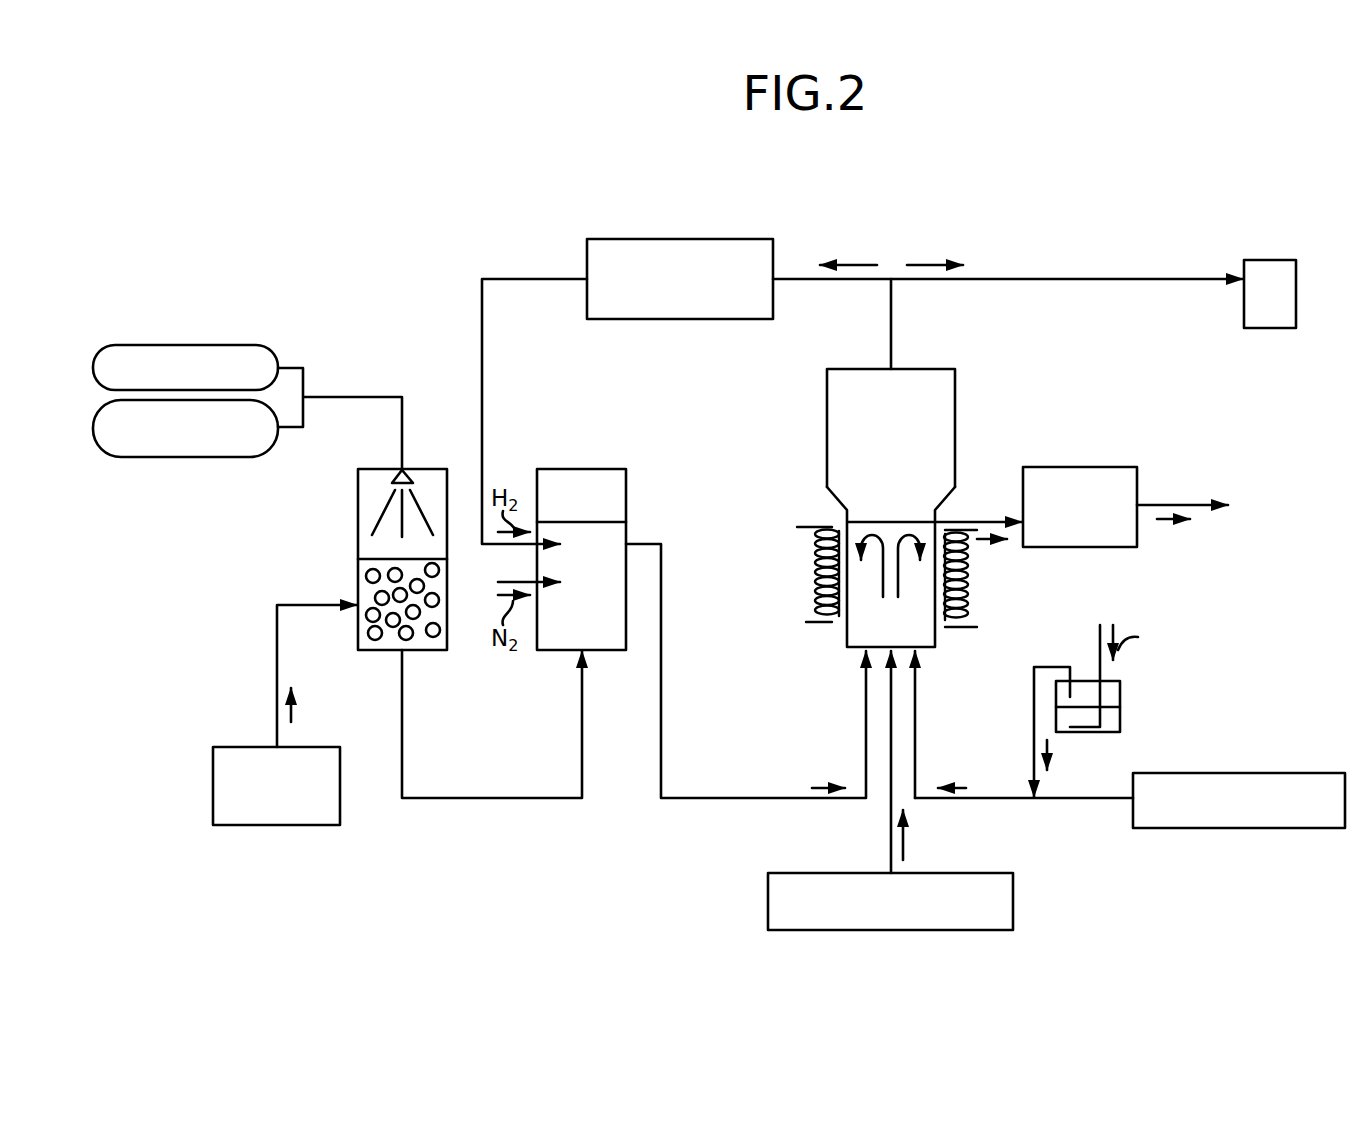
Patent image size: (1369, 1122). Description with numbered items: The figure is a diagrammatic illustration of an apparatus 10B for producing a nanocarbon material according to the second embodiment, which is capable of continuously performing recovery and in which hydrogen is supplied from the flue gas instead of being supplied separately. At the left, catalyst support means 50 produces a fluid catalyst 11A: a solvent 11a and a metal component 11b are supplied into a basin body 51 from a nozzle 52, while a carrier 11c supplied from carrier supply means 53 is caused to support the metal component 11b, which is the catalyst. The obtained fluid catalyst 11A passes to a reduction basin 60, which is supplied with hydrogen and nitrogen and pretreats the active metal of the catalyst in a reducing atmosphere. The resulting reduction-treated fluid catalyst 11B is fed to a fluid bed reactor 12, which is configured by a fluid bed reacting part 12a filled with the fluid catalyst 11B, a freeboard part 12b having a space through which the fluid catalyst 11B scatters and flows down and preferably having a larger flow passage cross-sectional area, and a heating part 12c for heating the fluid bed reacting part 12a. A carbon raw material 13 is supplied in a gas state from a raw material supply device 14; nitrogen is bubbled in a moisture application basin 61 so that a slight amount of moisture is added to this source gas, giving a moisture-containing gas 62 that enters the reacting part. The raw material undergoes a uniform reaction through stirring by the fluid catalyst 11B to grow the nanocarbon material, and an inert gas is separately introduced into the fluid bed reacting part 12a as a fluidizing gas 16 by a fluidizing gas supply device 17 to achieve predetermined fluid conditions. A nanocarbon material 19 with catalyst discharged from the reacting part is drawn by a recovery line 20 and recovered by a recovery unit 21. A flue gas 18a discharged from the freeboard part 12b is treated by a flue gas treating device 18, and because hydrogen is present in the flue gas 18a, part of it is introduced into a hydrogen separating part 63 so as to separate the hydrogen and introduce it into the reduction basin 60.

The apparatus for producing a nanocarbon material 10B is at (585, 216).
The solvent 11a is at (191, 345).
The metal component 11b is at (190, 458).
The fluid catalyst 11A is at (372, 578).
The reduction-treated fluid catalyst 11B is at (812, 789).
The carrier 11c is at (295, 705).
The fluid bed reactor 12 is at (836, 508).
The fluid bed reacting part 12a is at (847, 557).
The freeboard part 12b is at (827, 452).
The heating part 12c is at (863, 571).
The carbon raw material 13 is at (956, 789).
The raw material supply device 14 is at (1316, 773).
The fluidizing gas 16 is at (905, 845).
The fluidizing gas supply device 17 is at (802, 873).
The flue gas treating device 18 is at (1262, 265).
The flue gas 18a is at (845, 265).
The nanocarbon material with catalyst 19 is at (995, 546).
The recovery line 20 is at (975, 522).
The recovery unit 21 is at (1076, 467).
The catalyst support means 50 is at (372, 538).
The basin body 51 is at (371, 468).
The nozzle 52 is at (407, 484).
The carrier supply means 53 is at (242, 748).
The reduction basin 60 is at (590, 457).
The moisture application basin 61 is at (1120, 692).
The moisture-containing gas 62 is at (1050, 752).
The hydrogen separating part 63 is at (738, 239).